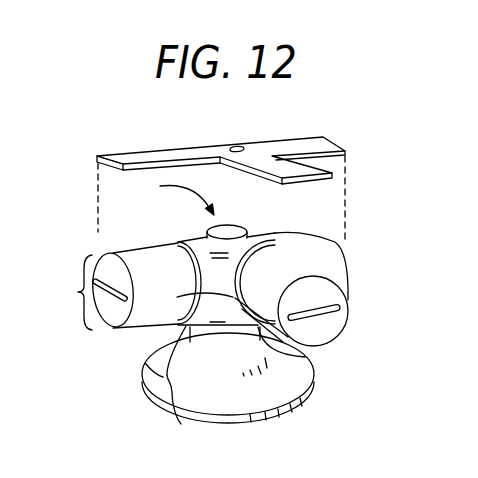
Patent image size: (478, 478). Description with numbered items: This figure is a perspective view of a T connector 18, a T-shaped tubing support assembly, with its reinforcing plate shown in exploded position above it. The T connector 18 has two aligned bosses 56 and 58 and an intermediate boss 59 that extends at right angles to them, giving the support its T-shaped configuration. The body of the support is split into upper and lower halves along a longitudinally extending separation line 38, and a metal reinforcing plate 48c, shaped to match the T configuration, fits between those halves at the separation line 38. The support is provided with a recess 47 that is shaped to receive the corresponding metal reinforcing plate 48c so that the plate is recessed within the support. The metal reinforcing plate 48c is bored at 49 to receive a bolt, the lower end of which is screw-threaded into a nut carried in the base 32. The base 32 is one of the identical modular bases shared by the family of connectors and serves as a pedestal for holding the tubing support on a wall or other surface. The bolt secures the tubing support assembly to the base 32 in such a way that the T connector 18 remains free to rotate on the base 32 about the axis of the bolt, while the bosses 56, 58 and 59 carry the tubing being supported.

The metal reinforcing plate 48c is at (145, 155).
The bore 49 is at (243, 146).
The T connector 18 is at (172, 197).
The boss 56 is at (130, 252).
The boss 58 is at (303, 235).
The intermediate boss 59 is at (290, 264).
The recess 47 is at (118, 304).
The separation line 38 is at (157, 303).
The base 32 is at (160, 382).